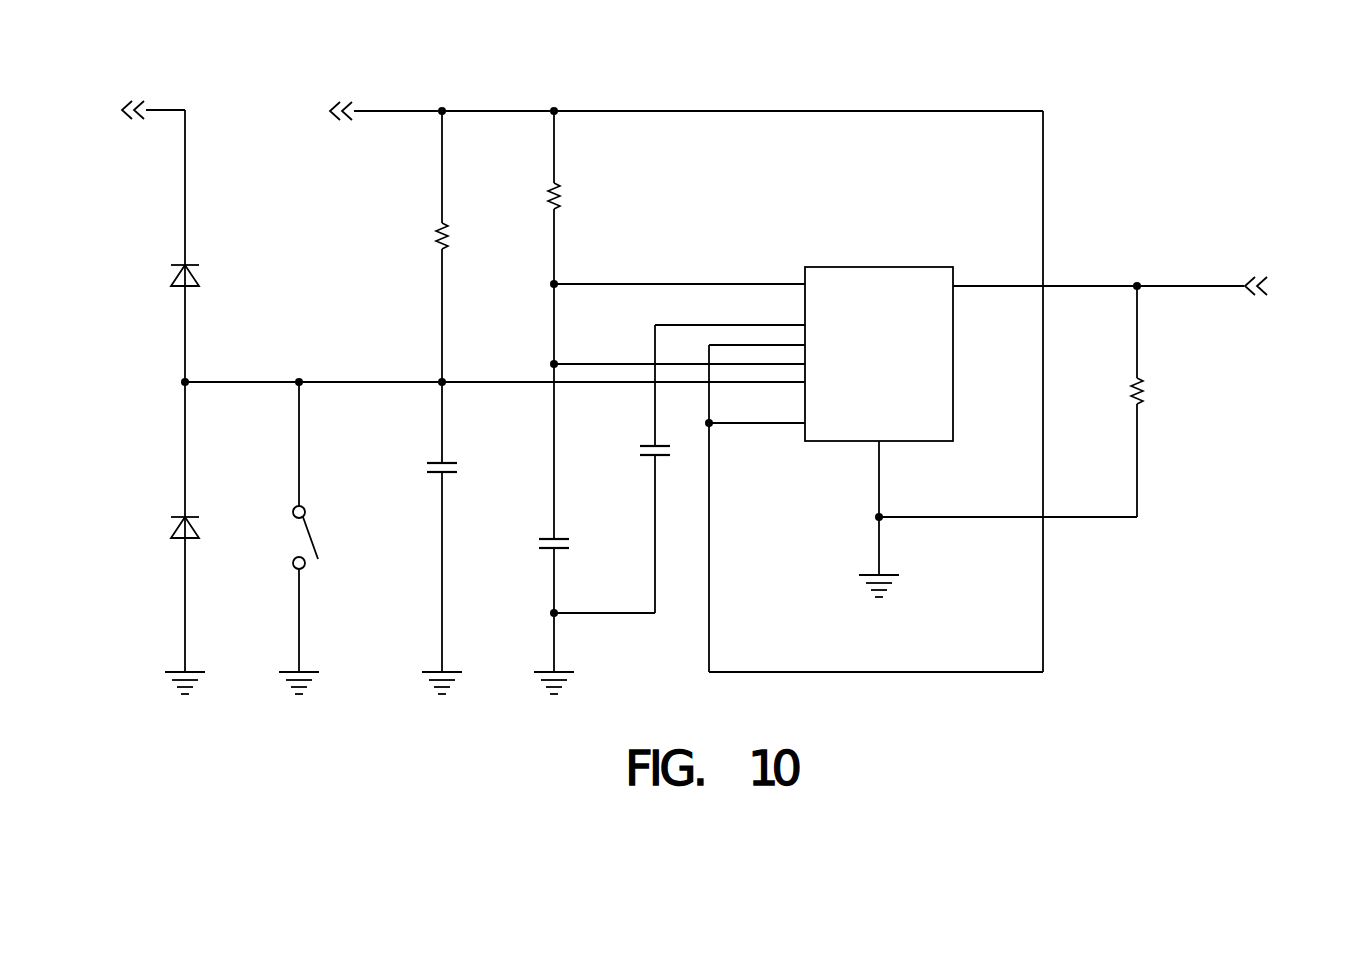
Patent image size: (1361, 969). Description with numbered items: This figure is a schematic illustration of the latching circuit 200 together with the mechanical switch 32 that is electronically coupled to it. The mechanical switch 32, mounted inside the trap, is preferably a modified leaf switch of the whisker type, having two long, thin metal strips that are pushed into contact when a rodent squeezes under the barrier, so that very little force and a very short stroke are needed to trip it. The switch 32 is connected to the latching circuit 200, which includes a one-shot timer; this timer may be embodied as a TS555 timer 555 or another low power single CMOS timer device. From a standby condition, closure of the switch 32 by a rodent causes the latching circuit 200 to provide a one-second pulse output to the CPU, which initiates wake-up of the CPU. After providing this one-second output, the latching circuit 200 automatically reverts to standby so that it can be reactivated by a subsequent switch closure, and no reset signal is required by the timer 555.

The mechanical switch 32 is at (319, 572).
The latching circuit 200 is at (1128, 223).
The TS555 timer IC 555 is at (866, 355).